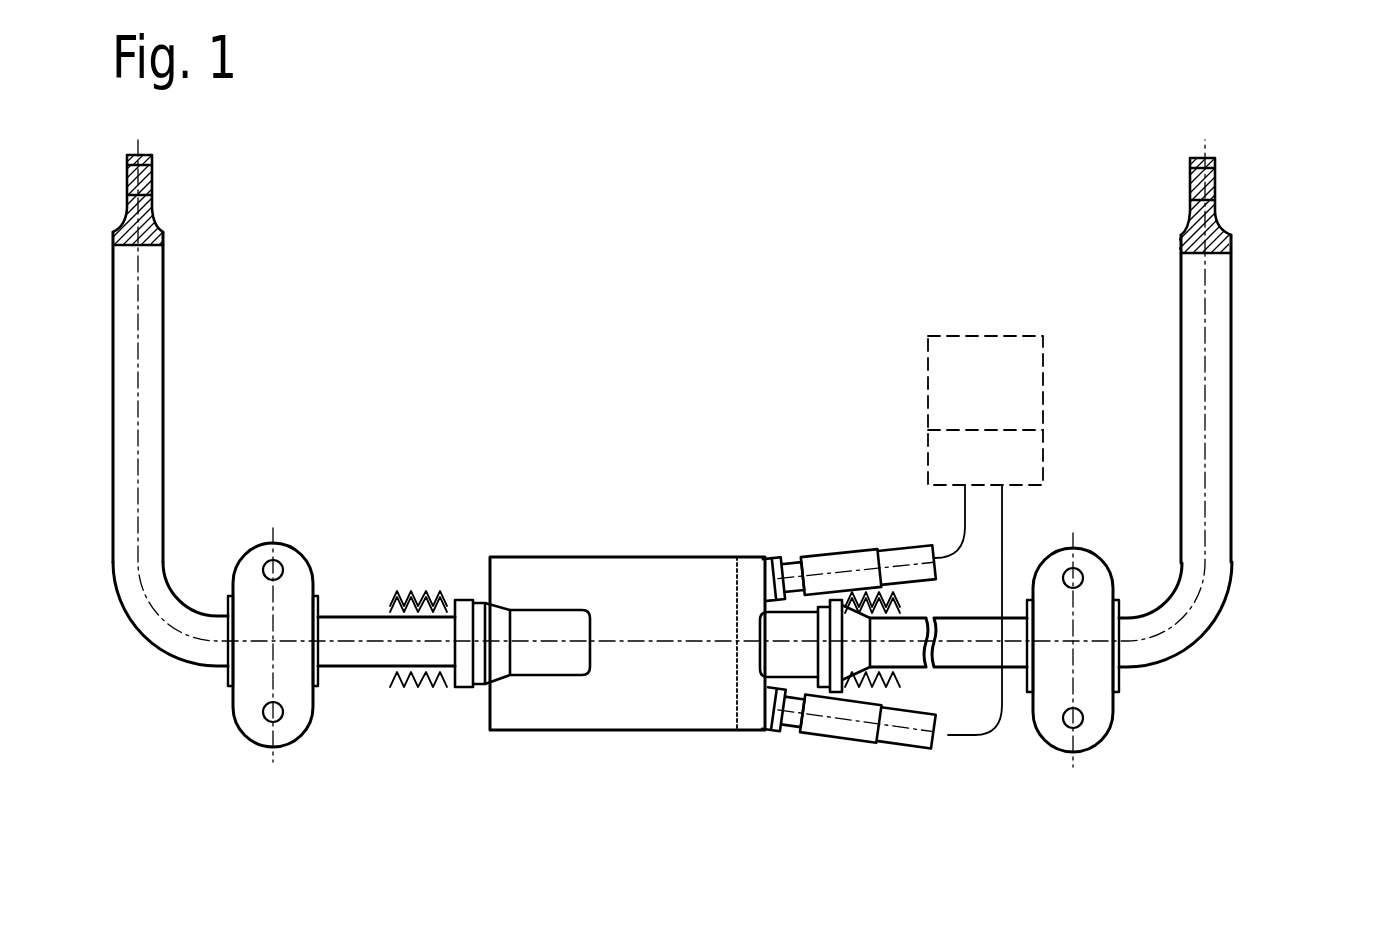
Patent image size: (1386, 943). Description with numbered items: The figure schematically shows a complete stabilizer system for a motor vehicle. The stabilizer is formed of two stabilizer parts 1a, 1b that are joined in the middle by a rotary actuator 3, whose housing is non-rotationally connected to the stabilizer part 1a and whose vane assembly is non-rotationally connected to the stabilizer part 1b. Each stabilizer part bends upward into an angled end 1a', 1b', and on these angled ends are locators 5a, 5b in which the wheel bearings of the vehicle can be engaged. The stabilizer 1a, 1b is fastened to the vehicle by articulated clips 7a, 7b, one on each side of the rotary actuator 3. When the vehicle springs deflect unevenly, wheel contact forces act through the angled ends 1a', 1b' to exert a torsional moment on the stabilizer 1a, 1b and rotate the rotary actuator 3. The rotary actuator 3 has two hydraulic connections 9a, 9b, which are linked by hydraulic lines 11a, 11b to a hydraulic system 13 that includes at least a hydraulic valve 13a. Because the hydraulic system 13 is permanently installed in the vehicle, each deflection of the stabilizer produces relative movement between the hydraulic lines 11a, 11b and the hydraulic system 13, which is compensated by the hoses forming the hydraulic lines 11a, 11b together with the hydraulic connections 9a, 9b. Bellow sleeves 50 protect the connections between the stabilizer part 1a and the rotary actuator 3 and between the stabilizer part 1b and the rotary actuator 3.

The stabilizer part 1a is at (1051, 688).
The stabilizer part 1b is at (284, 686).
The angled end 1a' is at (1270, 399).
The angled end 1b' is at (184, 397).
The rotary actuator 3 is at (518, 791).
The locator 5a is at (1212, 185).
The locator 5b is at (152, 178).
The articulated clip 7a is at (1095, 722).
The articulated clip 7b is at (241, 712).
The hydraulic connection 9a is at (797, 740).
The hydraulic connection 9b is at (790, 565).
The hydraulic line 11a is at (862, 746).
The hydraulic line 11b is at (856, 570).
The hydraulic system 13 is at (860, 392).
The hydraulic valve 13a is at (1023, 455).
The bellow sleeve 50 is at (425, 600).